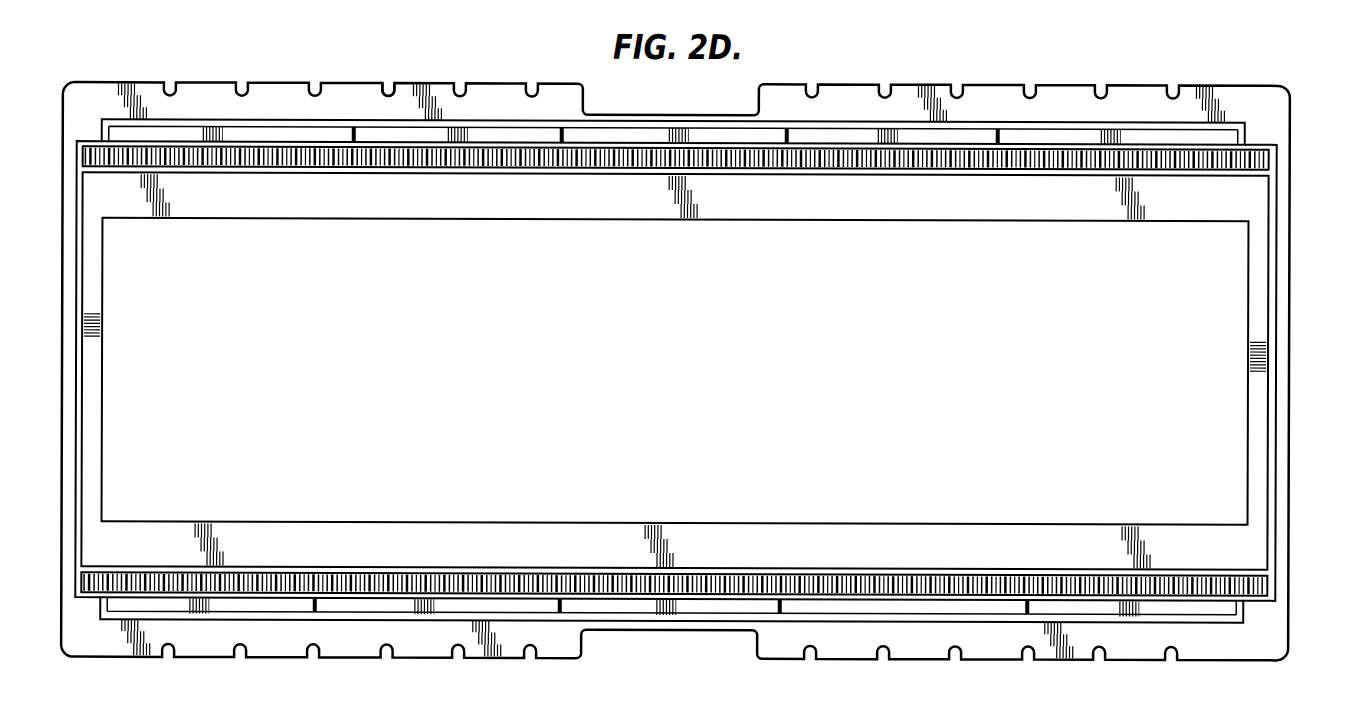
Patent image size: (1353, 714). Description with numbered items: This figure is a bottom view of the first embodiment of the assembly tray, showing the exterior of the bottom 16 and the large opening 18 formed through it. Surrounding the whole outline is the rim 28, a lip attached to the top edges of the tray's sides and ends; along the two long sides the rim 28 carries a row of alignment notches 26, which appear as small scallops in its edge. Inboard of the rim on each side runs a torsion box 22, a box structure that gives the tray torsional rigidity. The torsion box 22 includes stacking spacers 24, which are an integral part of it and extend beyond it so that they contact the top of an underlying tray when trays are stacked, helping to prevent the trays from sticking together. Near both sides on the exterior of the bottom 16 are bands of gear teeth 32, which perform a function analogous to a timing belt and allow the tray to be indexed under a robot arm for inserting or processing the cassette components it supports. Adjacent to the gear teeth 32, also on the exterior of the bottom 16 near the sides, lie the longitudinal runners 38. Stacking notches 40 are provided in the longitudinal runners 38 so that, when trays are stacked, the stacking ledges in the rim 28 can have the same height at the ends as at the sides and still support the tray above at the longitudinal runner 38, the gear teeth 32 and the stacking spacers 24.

The bottom 16 is at (550, 210).
The opening 18 is at (693, 379).
The torsion box 22 is at (305, 120).
The stacking spacers 24 is at (355, 144).
The alignment notches 26 is at (386, 85).
The rim 28 is at (1053, 97).
The gear teeth 32 is at (840, 162).
The longitudinal runners 38 is at (998, 173).
The stacking notches 40 is at (1266, 174).